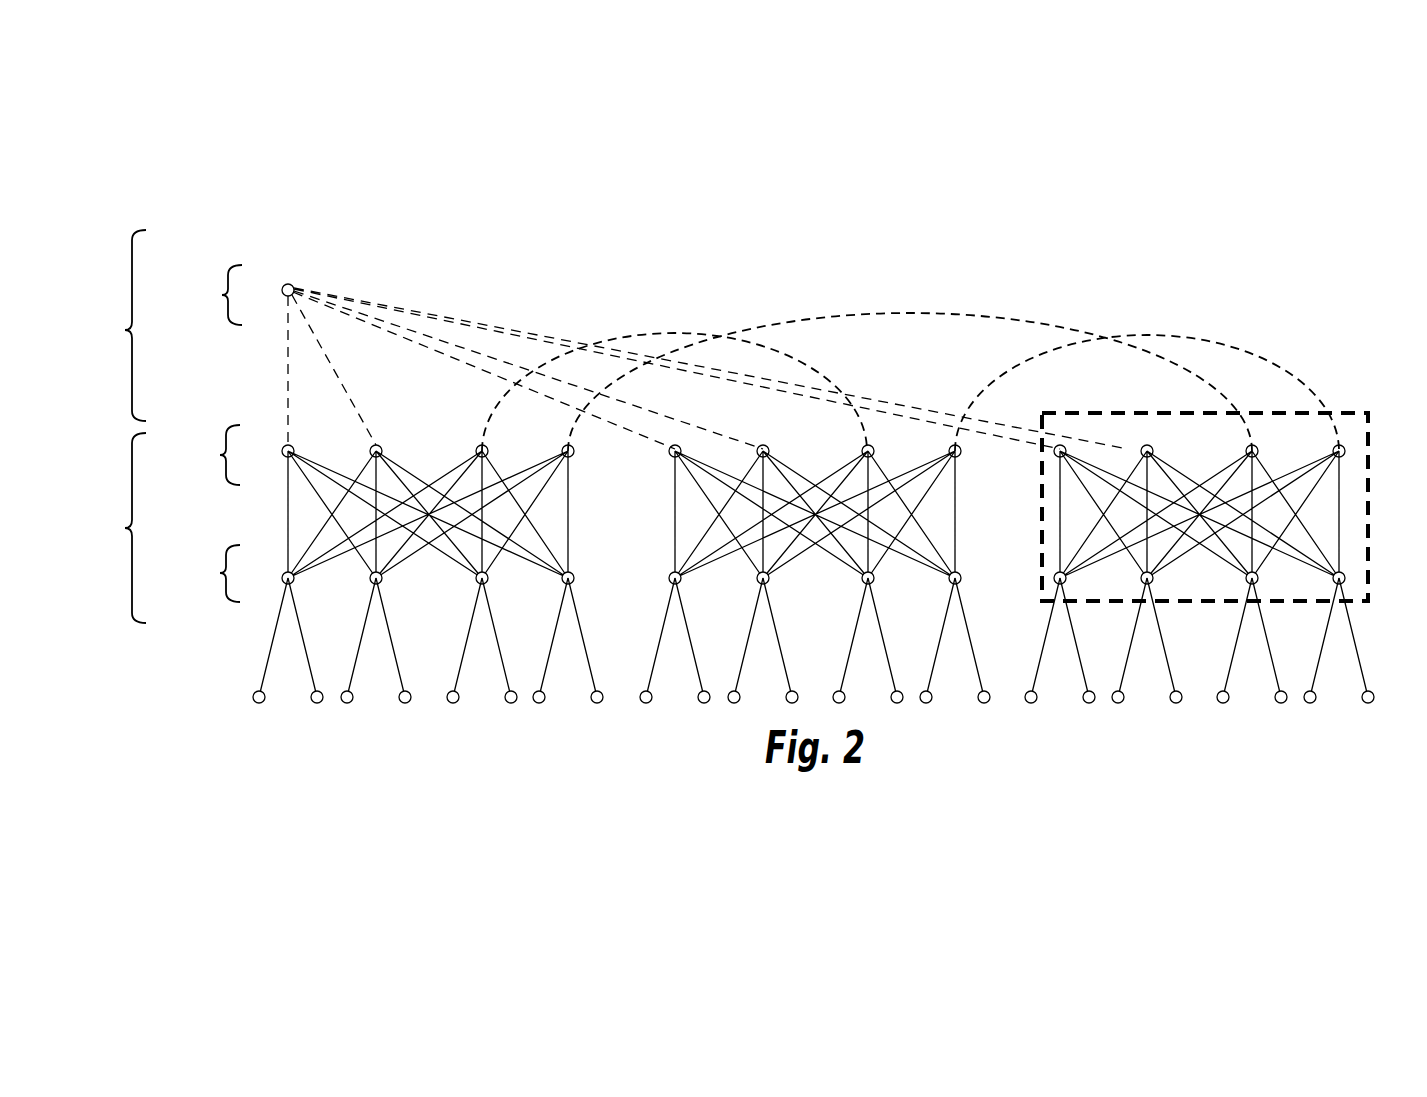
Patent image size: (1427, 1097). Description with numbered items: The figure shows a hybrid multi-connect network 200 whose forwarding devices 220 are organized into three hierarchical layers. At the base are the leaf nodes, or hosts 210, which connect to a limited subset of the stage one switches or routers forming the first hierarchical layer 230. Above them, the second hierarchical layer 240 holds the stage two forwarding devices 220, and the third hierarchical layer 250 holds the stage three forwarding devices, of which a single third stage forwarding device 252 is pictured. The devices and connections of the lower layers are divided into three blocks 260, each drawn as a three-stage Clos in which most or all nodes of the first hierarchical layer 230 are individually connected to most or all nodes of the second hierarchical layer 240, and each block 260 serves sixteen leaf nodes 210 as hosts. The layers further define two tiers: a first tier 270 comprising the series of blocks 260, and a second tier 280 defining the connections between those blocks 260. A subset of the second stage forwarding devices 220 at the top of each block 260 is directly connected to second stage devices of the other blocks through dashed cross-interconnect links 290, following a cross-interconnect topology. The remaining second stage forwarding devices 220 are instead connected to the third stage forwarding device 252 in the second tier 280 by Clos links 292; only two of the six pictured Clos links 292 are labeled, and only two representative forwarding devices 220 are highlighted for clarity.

The network 200 is at (740, 490).
The hosts 210 is at (807, 675).
The forwarding devices 220 is at (670, 571).
The first hierarchical layer 230 is at (219, 573).
The second hierarchical layer 240 is at (216, 455).
The third hierarchical layer 250 is at (238, 283).
The third stage forwarding device 252 is at (298, 269).
The block 260 is at (1228, 507).
The first tier 270 is at (124, 528).
The second tier 280 is at (124, 330).
The cross-interconnect links 290 is at (1140, 323).
The Clos links 292 is at (333, 350).